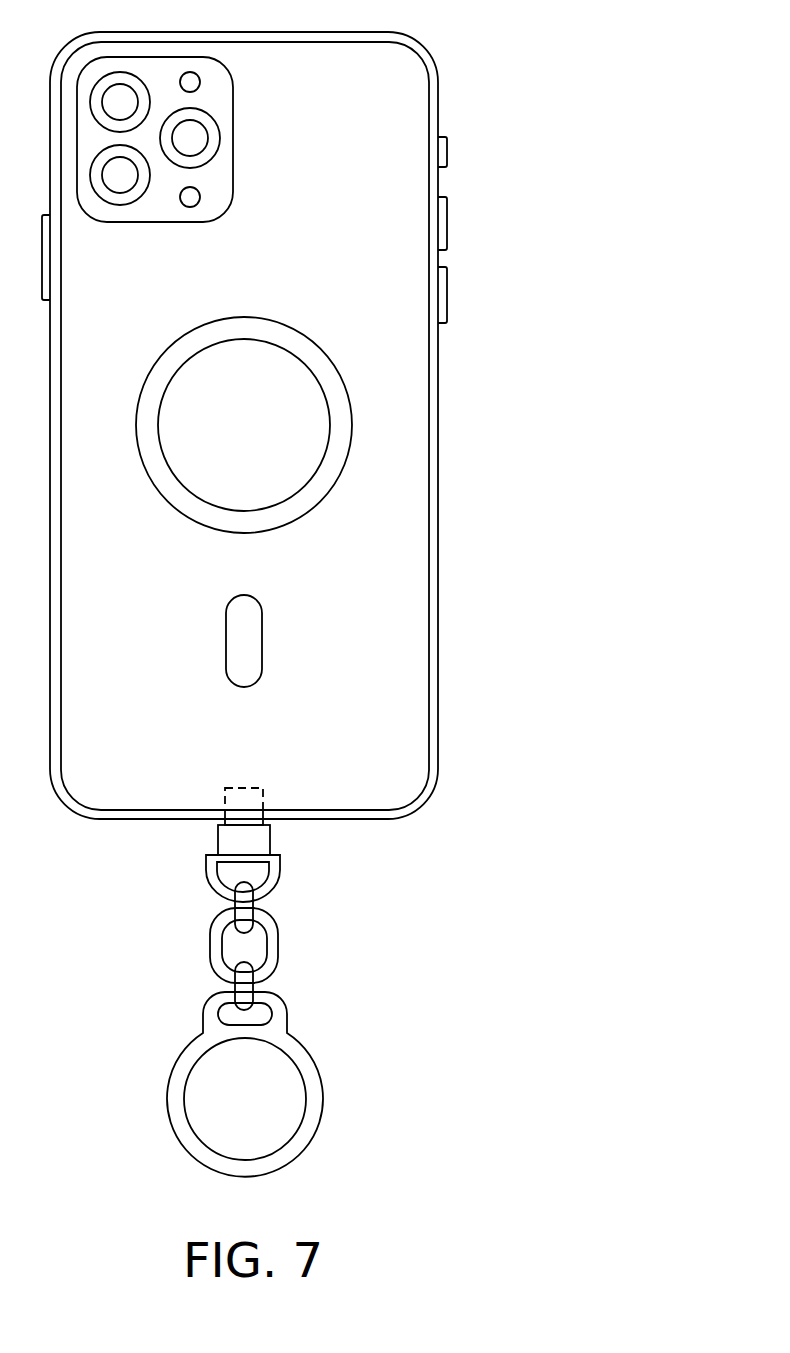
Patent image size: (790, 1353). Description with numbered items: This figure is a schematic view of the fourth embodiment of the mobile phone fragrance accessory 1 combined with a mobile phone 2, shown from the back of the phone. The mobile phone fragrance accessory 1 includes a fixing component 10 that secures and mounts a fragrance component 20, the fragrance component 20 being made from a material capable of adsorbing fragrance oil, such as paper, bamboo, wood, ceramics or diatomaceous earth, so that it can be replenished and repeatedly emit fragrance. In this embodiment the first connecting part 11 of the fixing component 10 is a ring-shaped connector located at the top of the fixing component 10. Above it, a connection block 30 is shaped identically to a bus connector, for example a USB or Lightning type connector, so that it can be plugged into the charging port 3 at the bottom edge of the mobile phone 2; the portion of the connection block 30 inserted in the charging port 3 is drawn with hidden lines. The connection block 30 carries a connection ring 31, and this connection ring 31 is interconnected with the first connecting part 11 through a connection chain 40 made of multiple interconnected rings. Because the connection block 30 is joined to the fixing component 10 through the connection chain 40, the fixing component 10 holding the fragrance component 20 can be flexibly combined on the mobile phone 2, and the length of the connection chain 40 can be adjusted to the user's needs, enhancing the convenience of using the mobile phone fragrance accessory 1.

The mobile phone fragrance accessory 1 is at (244, 1076).
The mobile phone 2 is at (377, 97).
The charging port 3 is at (267, 820).
The fixing component 10 is at (305, 1068).
The first connecting part 11 is at (280, 1012).
The fragrance component 20 is at (228, 1120).
The connection block 30 is at (216, 843).
The connection ring 31 is at (212, 887).
The connection chain 40 is at (272, 947).